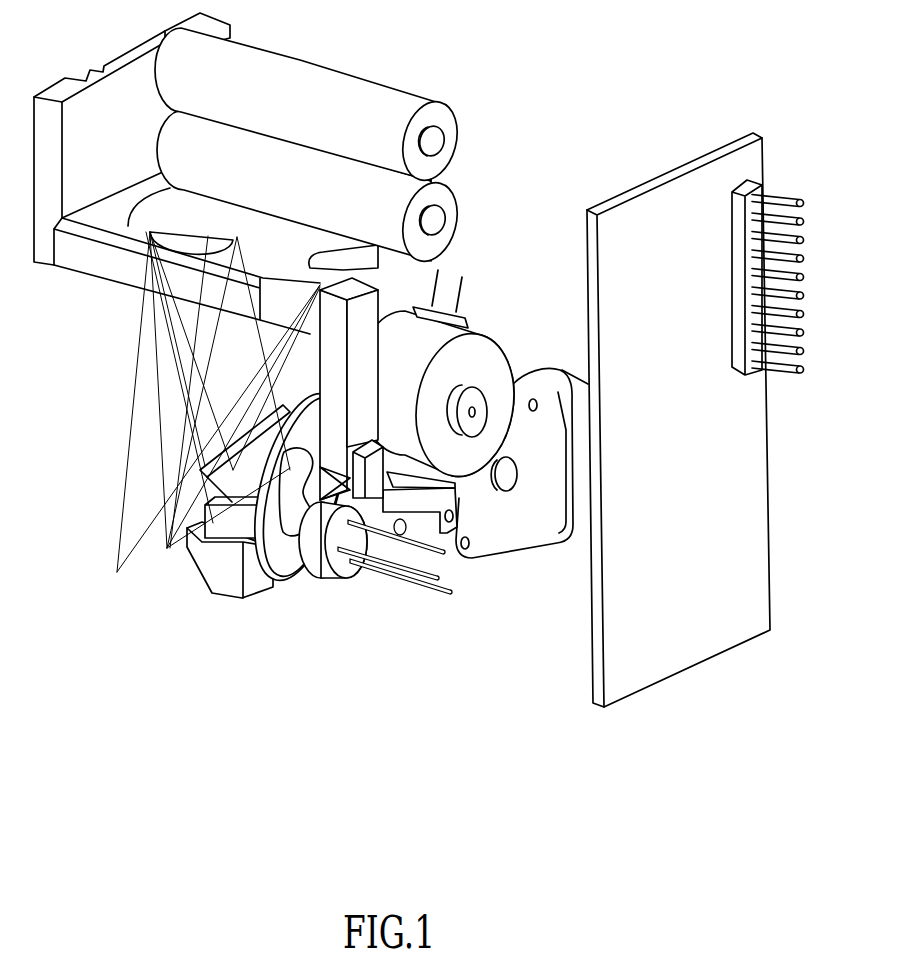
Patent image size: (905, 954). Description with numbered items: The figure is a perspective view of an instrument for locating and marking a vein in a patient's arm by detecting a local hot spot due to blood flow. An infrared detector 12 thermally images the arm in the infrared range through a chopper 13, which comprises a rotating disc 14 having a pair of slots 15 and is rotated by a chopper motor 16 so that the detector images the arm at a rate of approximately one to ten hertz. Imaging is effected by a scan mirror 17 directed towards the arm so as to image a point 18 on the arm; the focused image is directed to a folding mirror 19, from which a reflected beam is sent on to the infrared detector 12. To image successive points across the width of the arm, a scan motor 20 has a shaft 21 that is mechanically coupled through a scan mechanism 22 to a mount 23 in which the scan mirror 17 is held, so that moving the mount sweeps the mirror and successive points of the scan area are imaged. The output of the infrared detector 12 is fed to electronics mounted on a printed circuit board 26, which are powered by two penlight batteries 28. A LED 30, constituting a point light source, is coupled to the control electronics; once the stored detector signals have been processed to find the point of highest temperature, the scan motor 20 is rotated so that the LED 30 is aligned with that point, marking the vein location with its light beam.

The infrared detector 12 is at (350, 585).
The chopper 13 is at (296, 560).
The rotating disc 14 is at (300, 582).
The slots 15 is at (302, 428).
The chopper motor 16 is at (487, 347).
The scan mirror 17 is at (128, 248).
The point 18 is at (115, 579).
The folding mirror 19 is at (212, 454).
The scan motor 20 is at (495, 545).
The shaft 21 is at (400, 530).
The scan mechanism 22 is at (438, 510).
The mount 23 is at (73, 253).
The printed circuit board 26 is at (690, 658).
The penlight batteries 28 is at (353, 110).
The LED 30 is at (197, 557).